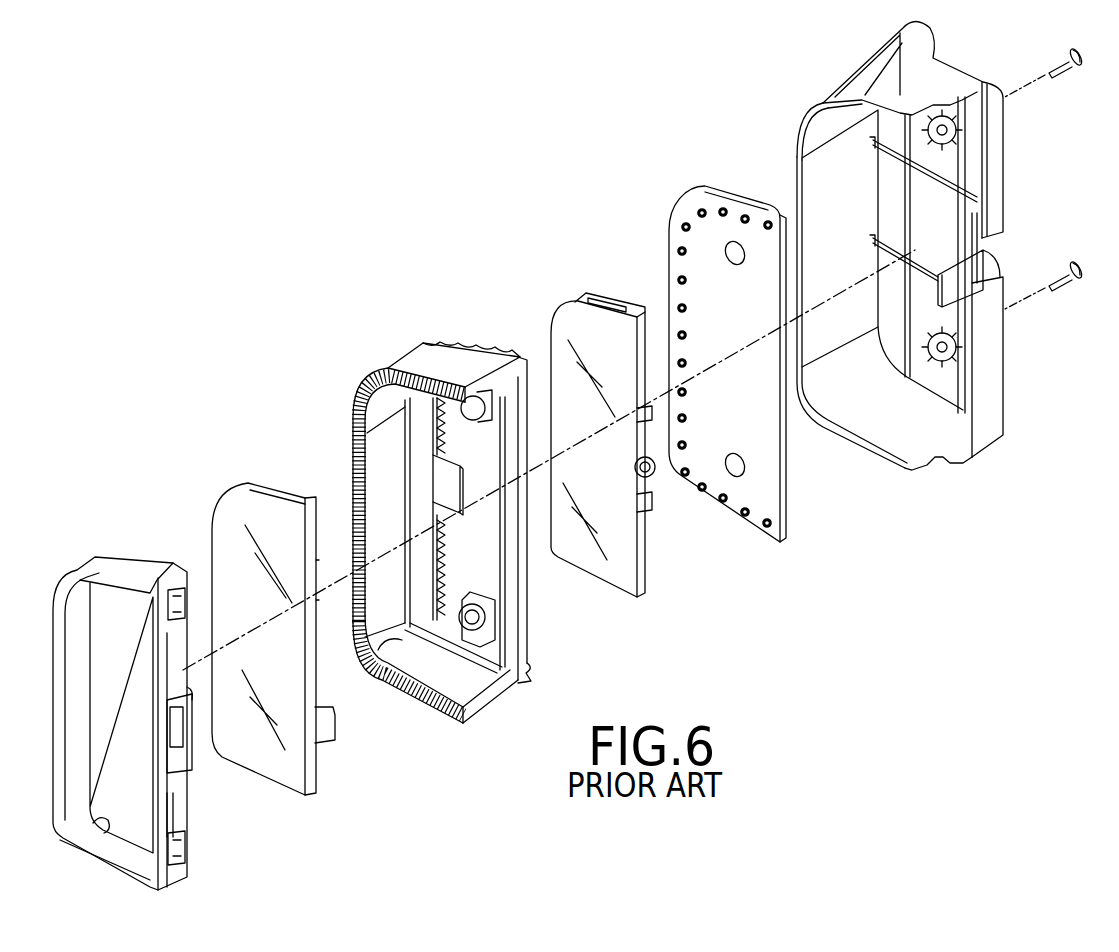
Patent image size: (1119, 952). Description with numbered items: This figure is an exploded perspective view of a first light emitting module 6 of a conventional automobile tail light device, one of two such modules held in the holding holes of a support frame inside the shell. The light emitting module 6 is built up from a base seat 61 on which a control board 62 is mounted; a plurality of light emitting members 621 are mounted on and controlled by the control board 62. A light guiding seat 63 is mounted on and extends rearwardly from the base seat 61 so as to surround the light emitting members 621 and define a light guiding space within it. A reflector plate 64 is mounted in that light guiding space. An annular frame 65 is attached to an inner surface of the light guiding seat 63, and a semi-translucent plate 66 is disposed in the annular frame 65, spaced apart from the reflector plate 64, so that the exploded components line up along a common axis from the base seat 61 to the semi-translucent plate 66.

The light emitting module 6 is at (348, 277).
The base seat 61 is at (812, 115).
The control board 62 is at (760, 425).
The light emitting members 621 is at (681, 250).
The light guiding seat 63 is at (350, 400).
The reflector plate 64 is at (578, 318).
The annular frame 65 is at (137, 567).
The semi-translucent plate 66 is at (233, 550).